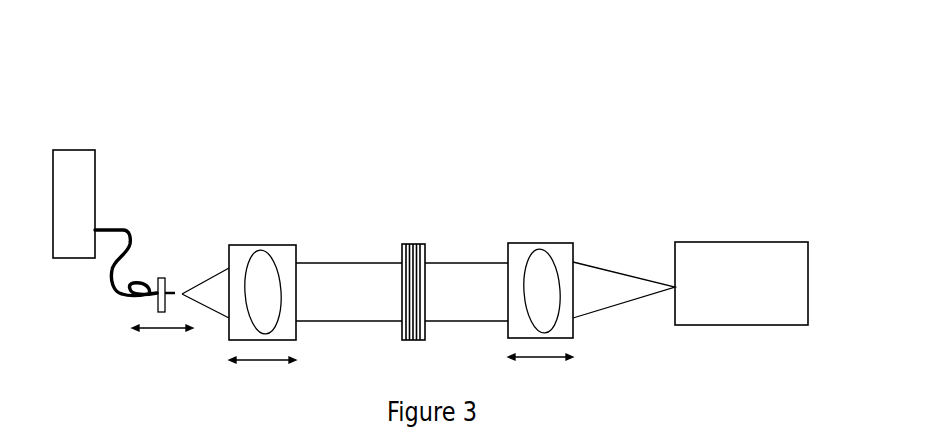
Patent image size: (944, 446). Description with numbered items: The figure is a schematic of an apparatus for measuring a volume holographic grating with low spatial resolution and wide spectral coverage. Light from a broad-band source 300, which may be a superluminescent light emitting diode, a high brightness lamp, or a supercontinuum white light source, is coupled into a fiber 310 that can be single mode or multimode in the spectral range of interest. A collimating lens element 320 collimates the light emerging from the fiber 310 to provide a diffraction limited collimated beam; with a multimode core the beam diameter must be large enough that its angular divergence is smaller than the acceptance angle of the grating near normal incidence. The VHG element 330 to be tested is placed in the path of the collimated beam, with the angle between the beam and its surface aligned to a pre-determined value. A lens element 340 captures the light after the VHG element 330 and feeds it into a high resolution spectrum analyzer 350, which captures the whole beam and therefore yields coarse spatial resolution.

The broad-band source 300 is at (75, 150).
The fiber 310 is at (122, 228).
The collimating lens element 320 is at (252, 250).
The VHG element 330 is at (412, 244).
The lens element 340 is at (543, 243).
The spectrum analyzer 350 is at (703, 248).